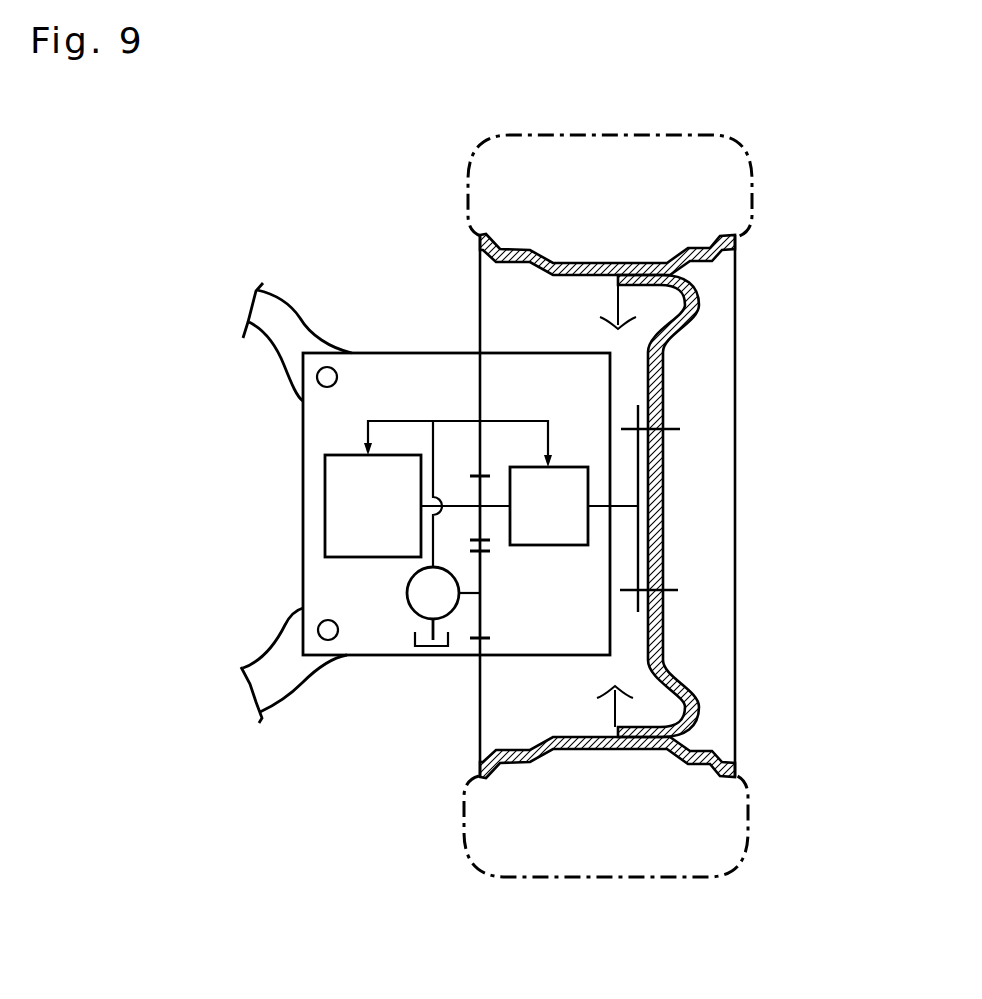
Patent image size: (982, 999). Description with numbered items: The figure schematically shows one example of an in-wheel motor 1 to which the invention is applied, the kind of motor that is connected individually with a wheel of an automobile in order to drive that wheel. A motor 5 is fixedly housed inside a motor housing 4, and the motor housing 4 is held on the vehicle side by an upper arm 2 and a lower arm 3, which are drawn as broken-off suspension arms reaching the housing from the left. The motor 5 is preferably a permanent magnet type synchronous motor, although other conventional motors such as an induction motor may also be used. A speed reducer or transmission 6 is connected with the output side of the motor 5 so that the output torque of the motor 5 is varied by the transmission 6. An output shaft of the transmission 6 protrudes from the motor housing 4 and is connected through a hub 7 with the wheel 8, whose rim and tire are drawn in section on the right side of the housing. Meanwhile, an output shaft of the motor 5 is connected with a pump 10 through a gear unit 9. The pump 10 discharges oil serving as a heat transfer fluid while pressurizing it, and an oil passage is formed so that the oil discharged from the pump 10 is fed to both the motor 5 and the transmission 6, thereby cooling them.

The in-wheel motor 1 is at (268, 506).
The upper arm 2 is at (287, 326).
The lower arm 3 is at (282, 685).
The motor housing 4 is at (303, 440).
The motor 5 is at (358, 525).
The transmission 6 is at (552, 528).
The hub 7 is at (640, 461).
The wheel 8 is at (698, 377).
The gear unit 9 is at (477, 458).
The pump 10 is at (417, 592).